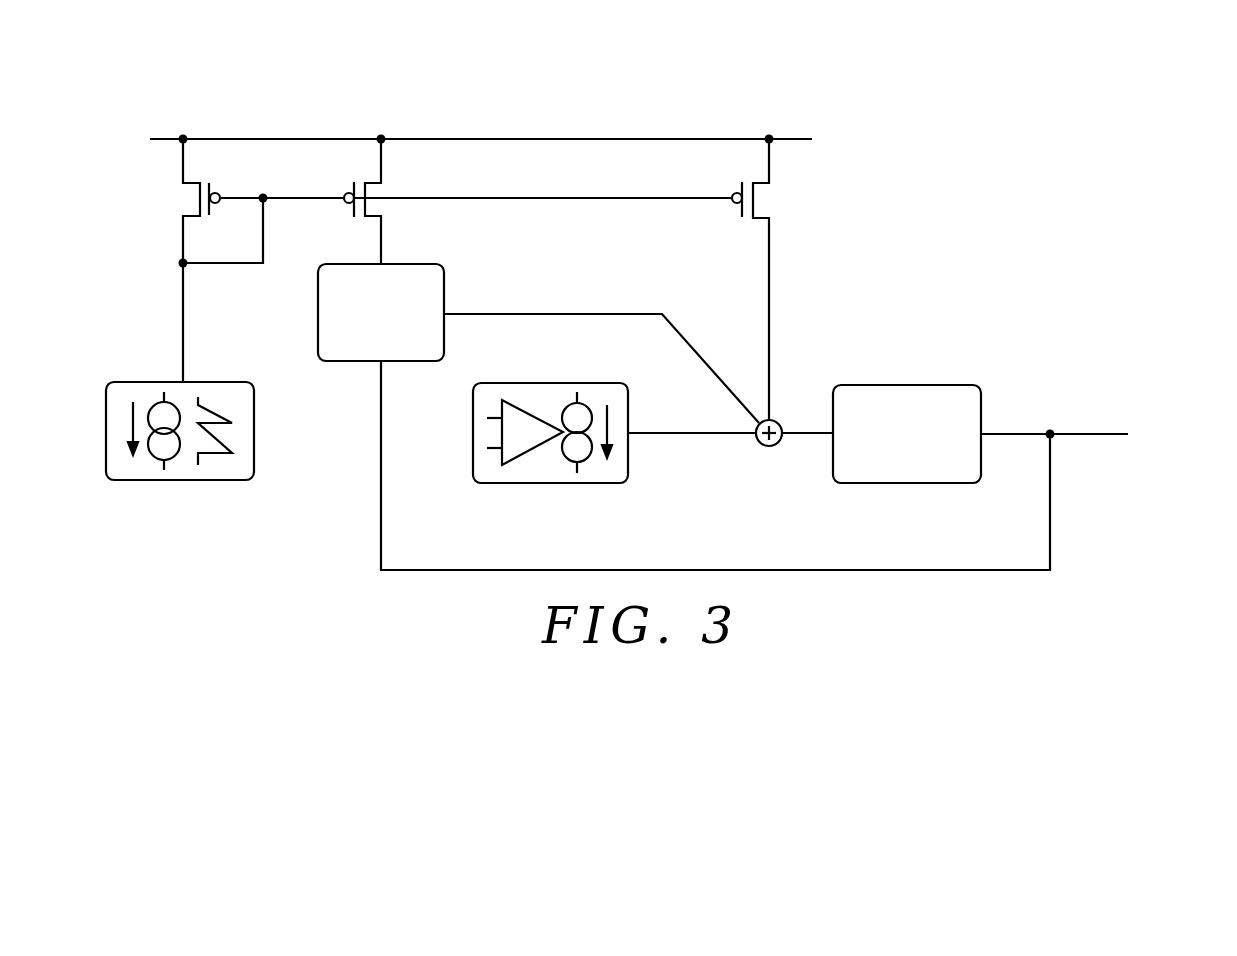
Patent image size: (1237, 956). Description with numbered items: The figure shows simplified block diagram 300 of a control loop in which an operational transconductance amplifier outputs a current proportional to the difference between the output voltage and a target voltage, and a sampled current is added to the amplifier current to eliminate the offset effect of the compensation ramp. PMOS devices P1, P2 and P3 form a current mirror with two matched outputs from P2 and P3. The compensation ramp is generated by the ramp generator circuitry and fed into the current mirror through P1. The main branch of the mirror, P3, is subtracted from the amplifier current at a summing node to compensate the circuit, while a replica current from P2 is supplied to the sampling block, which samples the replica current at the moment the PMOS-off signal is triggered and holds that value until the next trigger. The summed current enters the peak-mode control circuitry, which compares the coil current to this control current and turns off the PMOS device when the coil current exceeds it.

The simplified block diagram 300 is at (252, 82).
The PMOS device P1 is at (213, 201).
The PMOS device P2 is at (338, 201).
The PMOS device P3 is at (758, 279).